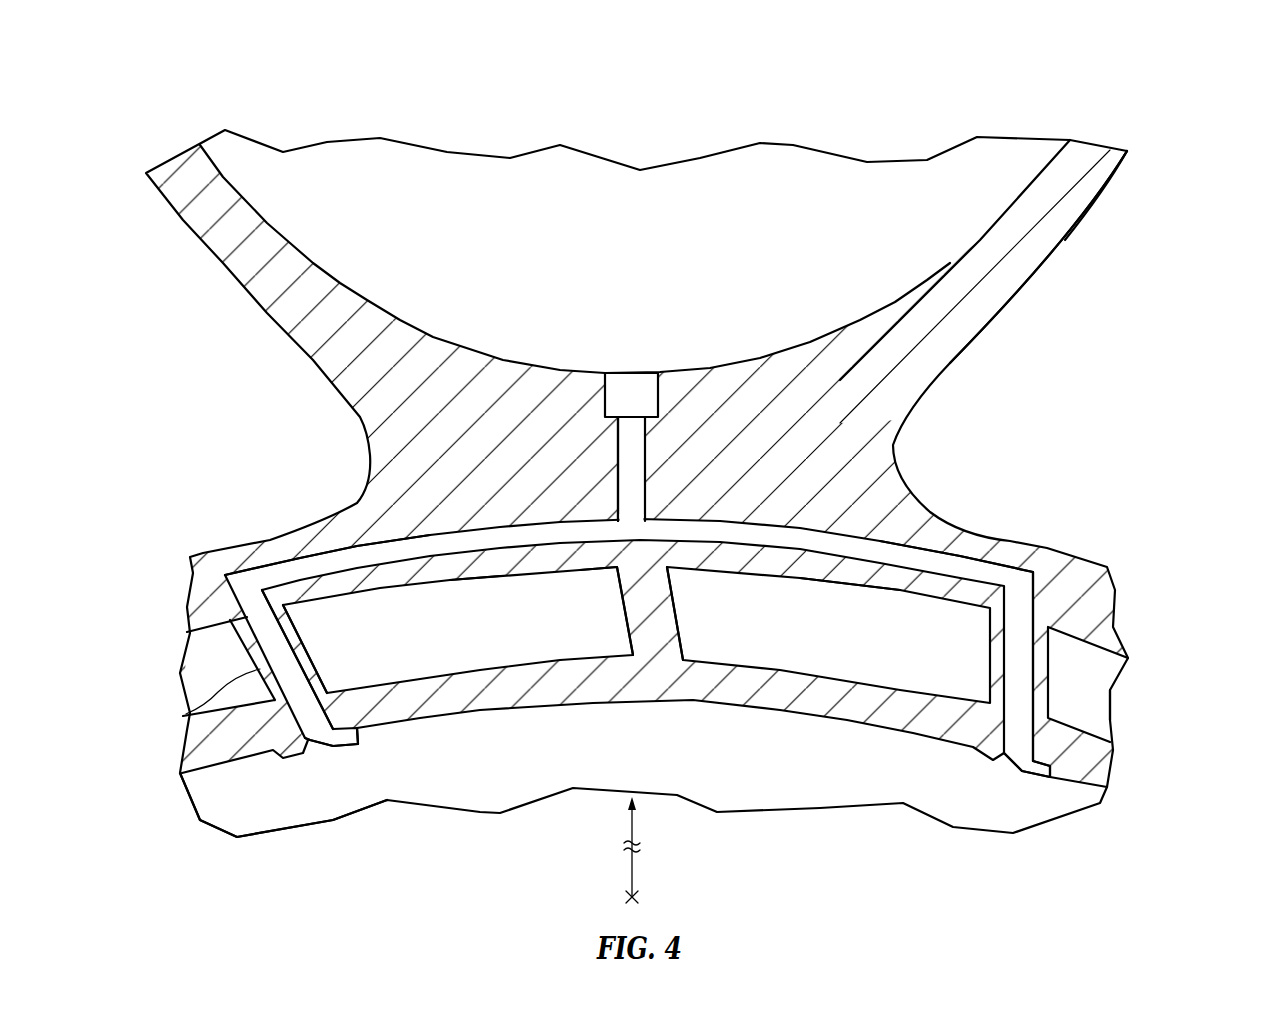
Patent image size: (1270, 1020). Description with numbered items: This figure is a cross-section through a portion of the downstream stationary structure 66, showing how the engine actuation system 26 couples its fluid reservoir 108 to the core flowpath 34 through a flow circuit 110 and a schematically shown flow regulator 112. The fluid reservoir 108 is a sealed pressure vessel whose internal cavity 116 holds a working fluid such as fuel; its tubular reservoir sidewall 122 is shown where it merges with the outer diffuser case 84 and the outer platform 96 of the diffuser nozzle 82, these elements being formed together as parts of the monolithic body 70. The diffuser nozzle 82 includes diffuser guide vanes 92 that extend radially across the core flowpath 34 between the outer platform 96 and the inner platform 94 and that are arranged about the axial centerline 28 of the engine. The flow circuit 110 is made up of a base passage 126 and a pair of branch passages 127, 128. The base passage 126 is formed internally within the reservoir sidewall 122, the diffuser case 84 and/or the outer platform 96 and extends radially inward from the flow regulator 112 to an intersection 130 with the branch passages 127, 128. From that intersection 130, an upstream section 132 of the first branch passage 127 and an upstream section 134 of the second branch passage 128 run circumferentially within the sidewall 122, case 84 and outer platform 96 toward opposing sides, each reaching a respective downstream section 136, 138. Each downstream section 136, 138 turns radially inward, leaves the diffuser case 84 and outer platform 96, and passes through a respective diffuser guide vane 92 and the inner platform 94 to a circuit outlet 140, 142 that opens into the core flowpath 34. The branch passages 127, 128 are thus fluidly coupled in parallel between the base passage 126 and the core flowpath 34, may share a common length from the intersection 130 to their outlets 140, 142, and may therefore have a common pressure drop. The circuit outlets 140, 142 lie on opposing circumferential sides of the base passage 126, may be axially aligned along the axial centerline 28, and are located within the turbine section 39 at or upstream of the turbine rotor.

The engine actuation system 26 is at (1023, 128).
The reservoir sidewall 122 is at (1095, 146).
The downstream stationary structure 66 is at (1153, 146).
The monolithic body 70 is at (1155, 130).
The fluid reservoir 108 is at (1013, 242).
The internal cavity 116 is at (756, 257).
The flow regulator 112 is at (633, 372).
The flow circuit 110 is at (650, 462).
The base passage 126 is at (617, 450).
The branch passage 127 is at (358, 543).
The branch passage 128 is at (1043, 548).
The outer diffuser case 84 is at (669, 615).
The outer platform 96 is at (669, 615).
The intersection 130 is at (628, 573).
The upstream section 132 is at (482, 560).
The upstream section 134 is at (855, 568).
The diffuser guide vanes 92 is at (303, 657).
The core flowpath 34 is at (422, 647).
The diffuser nozzle 82 is at (207, 653).
The downstream section 136 is at (186, 715).
The downstream section 138 is at (1034, 698).
The circuit outlet 140 is at (321, 748).
The circuit outlet 142 is at (1008, 758).
The inner platform 94 is at (806, 711).
The turbine section 39 is at (182, 808).
The axial centerline 28 is at (638, 897).